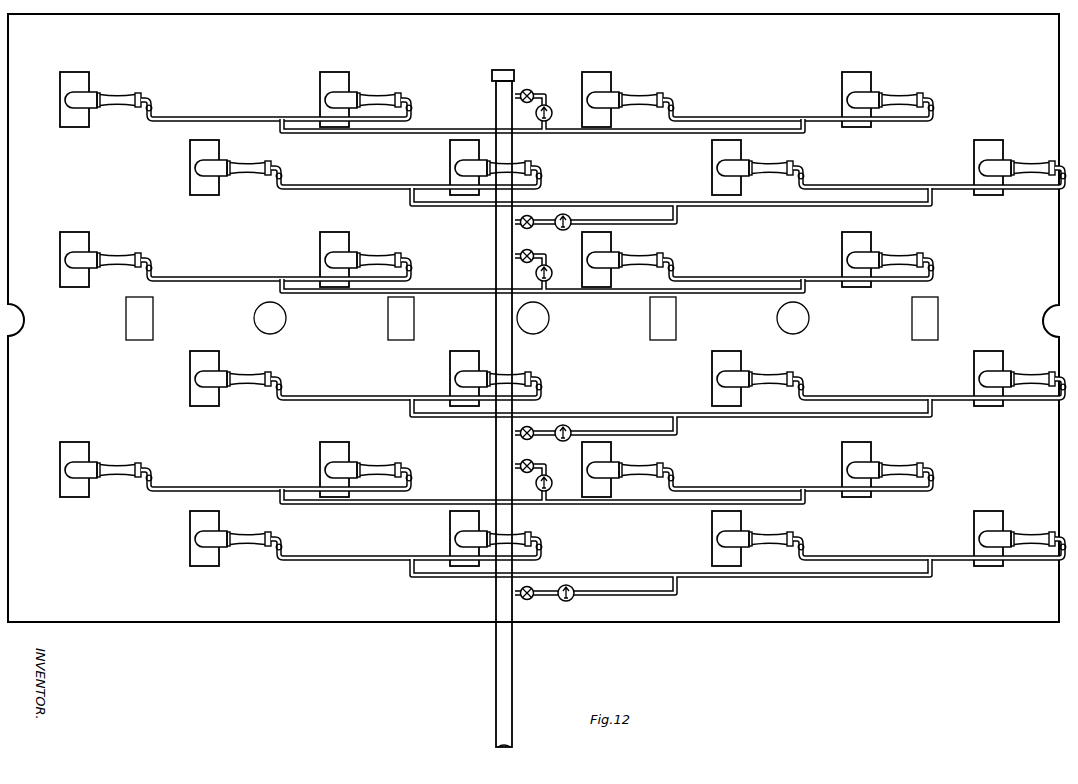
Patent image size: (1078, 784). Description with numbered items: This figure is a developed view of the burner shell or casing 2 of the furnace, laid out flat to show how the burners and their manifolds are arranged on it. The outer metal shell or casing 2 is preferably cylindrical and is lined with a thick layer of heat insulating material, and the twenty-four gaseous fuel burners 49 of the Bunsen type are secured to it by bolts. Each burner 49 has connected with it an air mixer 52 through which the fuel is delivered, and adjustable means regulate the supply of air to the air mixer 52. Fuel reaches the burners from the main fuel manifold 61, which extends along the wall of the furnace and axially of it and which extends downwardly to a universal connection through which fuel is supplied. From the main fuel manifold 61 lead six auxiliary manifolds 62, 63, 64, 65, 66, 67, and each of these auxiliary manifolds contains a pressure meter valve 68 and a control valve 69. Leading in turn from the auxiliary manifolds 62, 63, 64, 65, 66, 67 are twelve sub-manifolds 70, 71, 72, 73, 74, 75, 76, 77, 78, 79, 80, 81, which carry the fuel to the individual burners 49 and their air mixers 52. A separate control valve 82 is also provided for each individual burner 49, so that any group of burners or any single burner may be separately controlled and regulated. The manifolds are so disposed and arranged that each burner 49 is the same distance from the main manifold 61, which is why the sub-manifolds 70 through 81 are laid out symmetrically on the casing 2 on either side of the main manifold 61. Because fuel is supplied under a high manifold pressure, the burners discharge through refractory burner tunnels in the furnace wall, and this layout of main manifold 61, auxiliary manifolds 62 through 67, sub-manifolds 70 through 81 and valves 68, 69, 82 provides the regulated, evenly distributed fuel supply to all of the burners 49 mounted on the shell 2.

The outer metal shell or casing 2 is at (325, 610).
The gaseous fuel burner 49 is at (93, 96).
The air mixer 52 is at (132, 93).
The main fuel manifold 61 is at (513, 658).
The auxiliary manifold 62 is at (623, 572).
The auxiliary manifold 63 is at (668, 505).
The auxiliary manifold 64 is at (623, 412).
The auxiliary manifold 65 is at (630, 296).
The auxiliary manifold 66 is at (646, 201).
The auxiliary manifold 67 is at (626, 135).
The pressure meter valve 68 is at (549, 107).
The control valve 69 is at (527, 89).
The sub-manifold 70 is at (372, 557).
The sub-manifold 71 is at (895, 557).
The sub-manifold 72 is at (257, 486).
The sub-manifold 73 is at (768, 486).
The sub-manifold 74 is at (378, 397).
The sub-manifold 75 is at (898, 397).
The sub-manifold 76 is at (248, 276).
The sub-manifold 77 is at (771, 276).
The sub-manifold 78 is at (346, 186).
The sub-manifold 79 is at (891, 186).
The sub-manifold 80 is at (250, 116).
The sub-manifold 81 is at (777, 116).
The separate control valve 82 is at (153, 108).